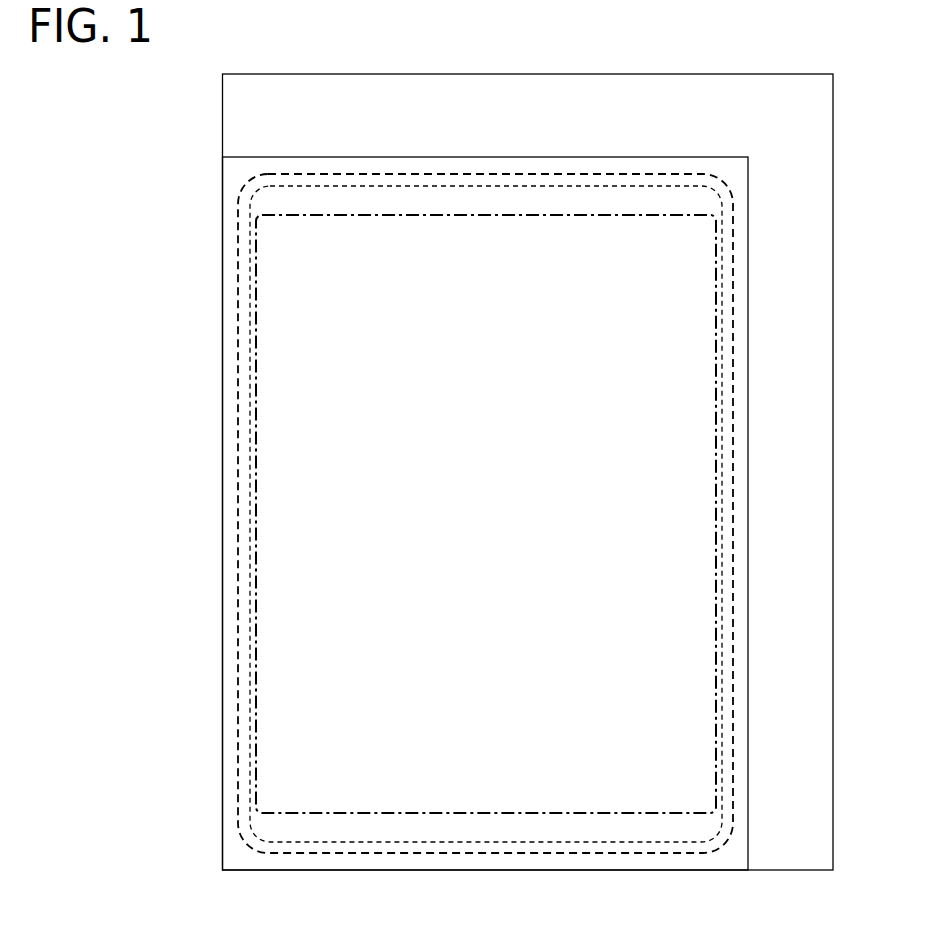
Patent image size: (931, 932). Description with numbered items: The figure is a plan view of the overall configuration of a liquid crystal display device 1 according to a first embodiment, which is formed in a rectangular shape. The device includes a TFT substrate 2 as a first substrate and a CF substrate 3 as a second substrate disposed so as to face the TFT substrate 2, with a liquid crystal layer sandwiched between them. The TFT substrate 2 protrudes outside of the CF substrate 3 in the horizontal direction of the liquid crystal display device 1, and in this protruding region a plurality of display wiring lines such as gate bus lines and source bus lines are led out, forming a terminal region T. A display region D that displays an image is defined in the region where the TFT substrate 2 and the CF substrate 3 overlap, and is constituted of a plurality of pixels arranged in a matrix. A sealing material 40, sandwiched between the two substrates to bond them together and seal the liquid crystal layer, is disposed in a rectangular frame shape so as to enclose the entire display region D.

The liquid crystal display device 1 is at (367, 41).
The TFT substrate 2 is at (546, 86).
The CF substrate 3 is at (212, 157).
The sealing material 40 is at (585, 856).
The display region D is at (486, 514).
The terminal region T is at (212, 74).